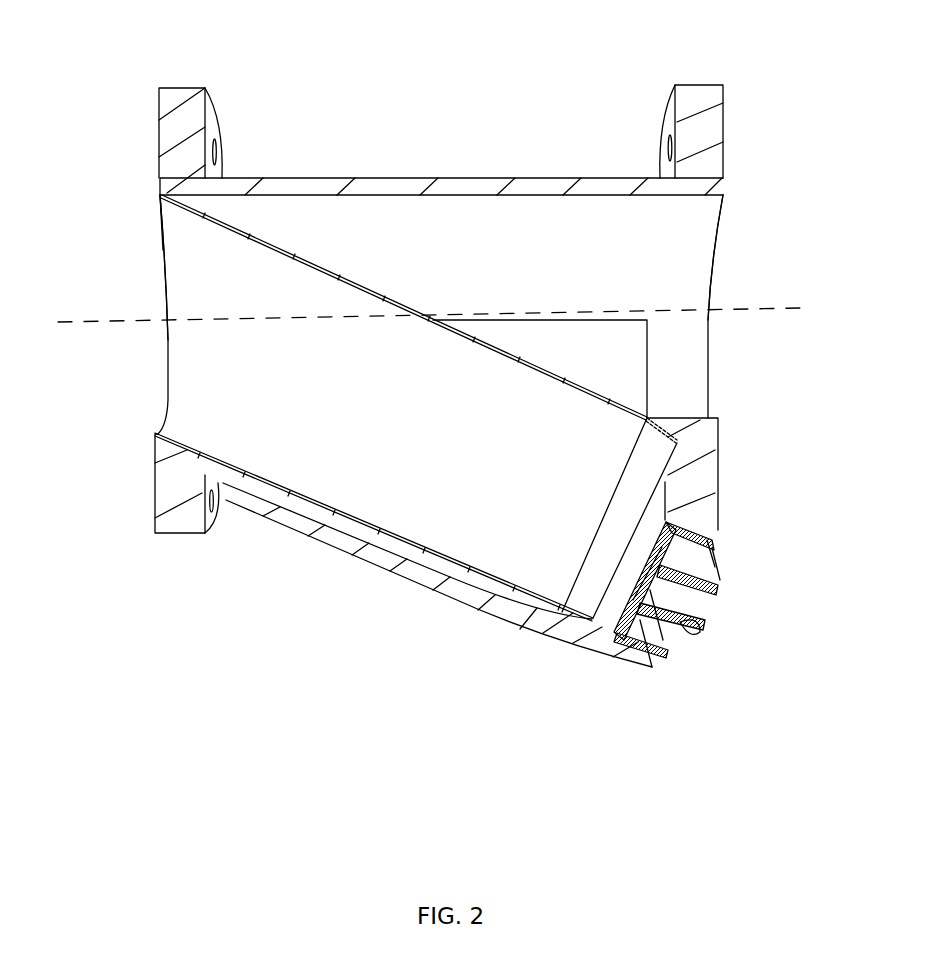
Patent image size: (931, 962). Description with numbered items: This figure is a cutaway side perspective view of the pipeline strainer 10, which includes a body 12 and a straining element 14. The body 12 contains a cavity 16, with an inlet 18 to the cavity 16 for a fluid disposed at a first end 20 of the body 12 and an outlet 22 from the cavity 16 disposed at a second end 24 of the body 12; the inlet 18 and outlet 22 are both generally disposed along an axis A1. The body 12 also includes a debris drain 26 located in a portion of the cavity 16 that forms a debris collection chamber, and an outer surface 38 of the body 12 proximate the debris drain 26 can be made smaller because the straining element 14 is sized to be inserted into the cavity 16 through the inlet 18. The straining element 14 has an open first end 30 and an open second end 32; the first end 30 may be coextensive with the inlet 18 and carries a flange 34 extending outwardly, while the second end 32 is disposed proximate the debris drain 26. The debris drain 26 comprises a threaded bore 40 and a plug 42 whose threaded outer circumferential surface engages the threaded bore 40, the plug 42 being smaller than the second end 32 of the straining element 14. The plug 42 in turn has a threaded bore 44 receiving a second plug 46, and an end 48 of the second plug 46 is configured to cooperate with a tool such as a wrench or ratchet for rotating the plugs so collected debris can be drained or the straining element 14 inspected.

The pipeline strainer 10 is at (452, 86).
The body 12 is at (540, 177).
The straining element 14 is at (423, 505).
The cavity 16 is at (465, 275).
The inlet 18 is at (180, 294).
The first end 20 is at (160, 166).
The outlet 22 is at (705, 300).
The second end 24 is at (718, 166).
The debris drain 26 is at (723, 540).
The first end 30 is at (165, 248).
The second end 32 is at (665, 483).
The flange 34 is at (160, 186).
The outer surface 38 is at (718, 438).
The threaded bore 40 is at (653, 660).
The plug 42 is at (677, 637).
The threaded bore 44 is at (703, 622).
The second plug 46 is at (717, 595).
The end 48 is at (713, 610).
The axis A1 is at (430, 323).